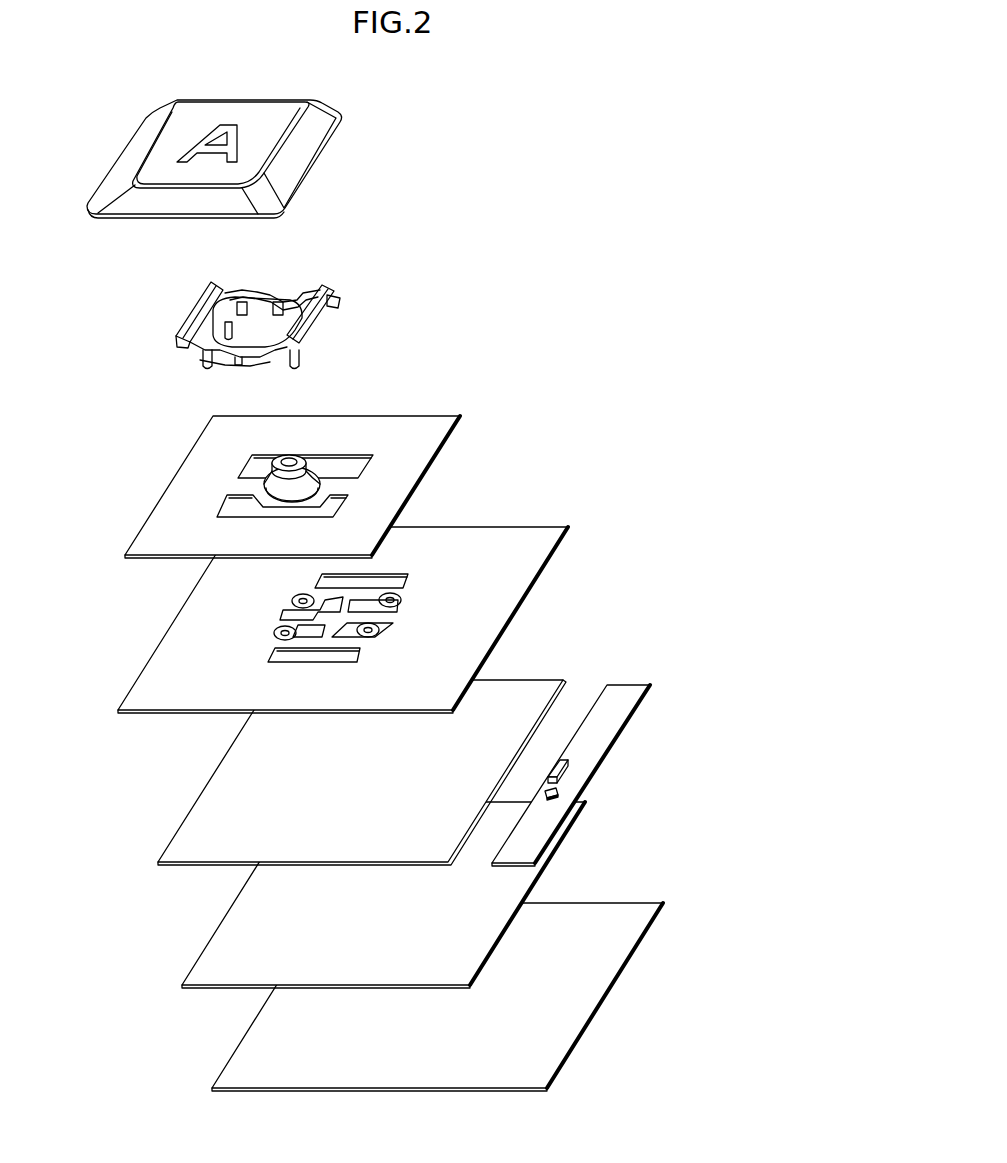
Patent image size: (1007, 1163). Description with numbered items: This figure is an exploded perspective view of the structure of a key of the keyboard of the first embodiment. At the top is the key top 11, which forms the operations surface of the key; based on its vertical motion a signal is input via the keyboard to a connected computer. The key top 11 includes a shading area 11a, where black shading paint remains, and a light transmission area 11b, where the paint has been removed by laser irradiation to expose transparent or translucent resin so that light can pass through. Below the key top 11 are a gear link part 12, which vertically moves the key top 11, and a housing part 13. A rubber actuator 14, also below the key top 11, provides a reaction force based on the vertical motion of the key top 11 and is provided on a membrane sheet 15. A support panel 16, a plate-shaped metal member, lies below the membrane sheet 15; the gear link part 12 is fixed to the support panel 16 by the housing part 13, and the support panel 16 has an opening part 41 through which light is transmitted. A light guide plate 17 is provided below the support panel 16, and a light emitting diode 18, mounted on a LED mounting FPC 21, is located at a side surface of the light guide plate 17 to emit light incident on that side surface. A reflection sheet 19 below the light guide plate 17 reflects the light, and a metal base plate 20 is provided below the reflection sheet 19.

The key top 11 is at (234, 134).
The shading area 11a is at (173, 140).
The light transmission area 11b is at (230, 128).
The gear link part 12 is at (268, 325).
The housing part 13 is at (200, 298).
The rubber actuator 14 is at (278, 478).
The membrane sheet 15 is at (320, 487).
The support panel 16 is at (363, 620).
The light guide plate 17 is at (560, 673).
The light emitting diode 18 is at (570, 767).
The reflection sheet 19 is at (193, 945).
The base plate 20 is at (622, 997).
The LED mounting FPC 21 is at (614, 767).
The opening part 41 is at (317, 632).